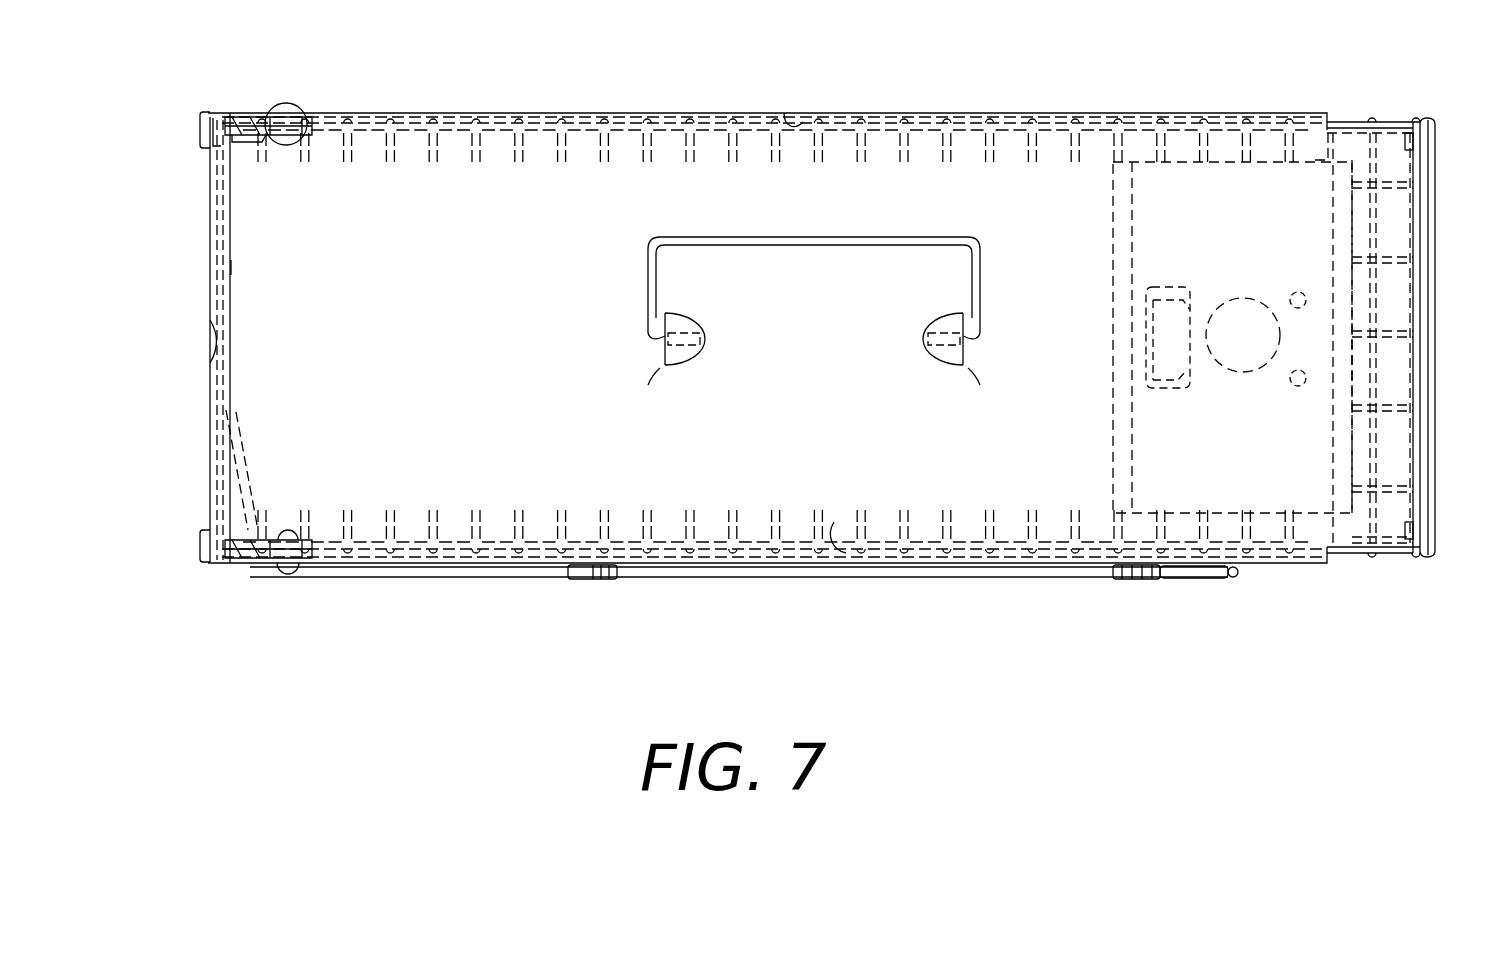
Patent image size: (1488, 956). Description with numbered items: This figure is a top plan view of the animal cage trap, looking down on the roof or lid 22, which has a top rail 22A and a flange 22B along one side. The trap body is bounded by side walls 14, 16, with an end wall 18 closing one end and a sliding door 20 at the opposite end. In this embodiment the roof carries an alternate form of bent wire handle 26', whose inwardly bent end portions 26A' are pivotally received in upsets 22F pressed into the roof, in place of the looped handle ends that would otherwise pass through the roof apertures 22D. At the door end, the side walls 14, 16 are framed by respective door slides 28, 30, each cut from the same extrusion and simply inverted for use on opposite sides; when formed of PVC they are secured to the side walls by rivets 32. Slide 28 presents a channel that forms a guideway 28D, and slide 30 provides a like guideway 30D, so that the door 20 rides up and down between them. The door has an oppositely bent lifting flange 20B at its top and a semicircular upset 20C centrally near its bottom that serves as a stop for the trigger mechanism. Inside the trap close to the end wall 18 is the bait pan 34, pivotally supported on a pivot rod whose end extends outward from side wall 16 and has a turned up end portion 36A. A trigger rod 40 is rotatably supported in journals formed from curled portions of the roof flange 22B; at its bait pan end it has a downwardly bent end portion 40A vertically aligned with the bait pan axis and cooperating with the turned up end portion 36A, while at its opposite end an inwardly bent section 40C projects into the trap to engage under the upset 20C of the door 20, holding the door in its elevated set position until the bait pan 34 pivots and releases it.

The side wall 14 is at (792, 120).
The side wall 16 is at (848, 555).
The end wall 18 is at (1436, 400).
The sliding door 20 is at (205, 245).
The lifting flange 20B is at (235, 268).
The semicircular upset 20C is at (213, 338).
The roof 22 is at (531, 290).
The panel top rail 22A is at (1110, 112).
The flange of the roof 22B is at (1320, 568).
The apertures 22D is at (583, 581).
The upsets 22F is at (692, 352).
The handle 26' is at (814, 288).
The inwardly bent end portions 26A' is at (838, 402).
The door slide 28 is at (242, 112).
The second channel 28D is at (205, 148).
The door slide 30 is at (228, 563).
The guideway 30D is at (205, 537).
The rivets 32 is at (287, 147).
The bait pan 34 is at (1240, 441).
The turned up end portion 36A is at (1236, 584).
The trigger rod 40 is at (470, 579).
The downwardly bent end portion 40A is at (1248, 583).
The inwardly bent section 40C is at (240, 445).